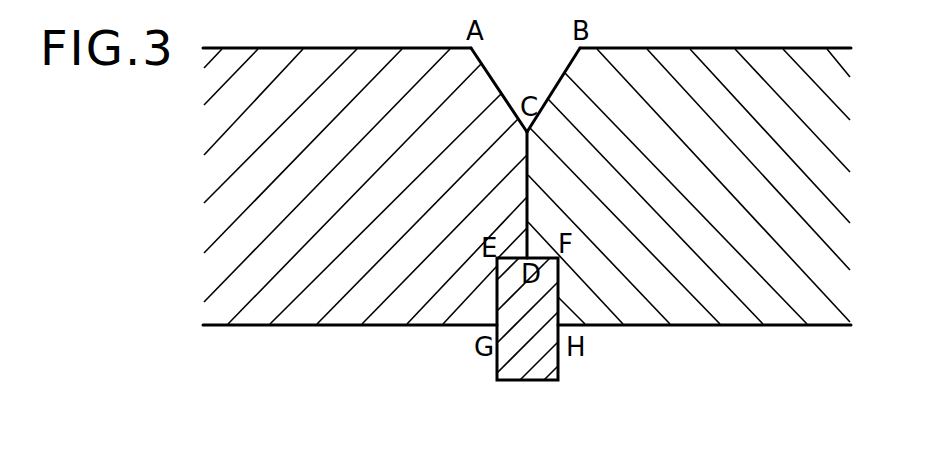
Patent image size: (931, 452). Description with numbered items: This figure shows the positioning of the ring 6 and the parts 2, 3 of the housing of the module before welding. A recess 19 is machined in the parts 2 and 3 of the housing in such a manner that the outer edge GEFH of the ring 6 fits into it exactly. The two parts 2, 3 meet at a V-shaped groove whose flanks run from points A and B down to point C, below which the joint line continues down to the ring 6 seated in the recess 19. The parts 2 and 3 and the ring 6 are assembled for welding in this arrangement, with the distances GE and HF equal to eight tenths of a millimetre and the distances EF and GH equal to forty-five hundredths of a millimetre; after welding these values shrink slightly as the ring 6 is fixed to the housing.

The housing part 2 is at (717, 60).
The housing part 3 is at (312, 62).
The ring 6 is at (547, 368).
The recess 19 is at (489, 293).